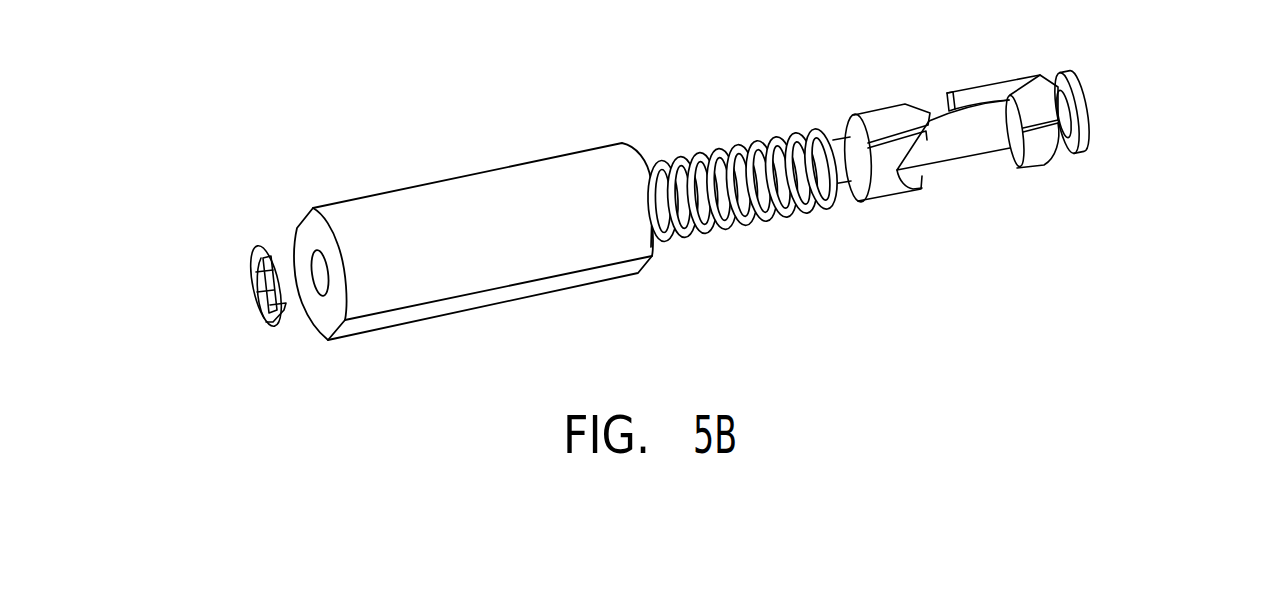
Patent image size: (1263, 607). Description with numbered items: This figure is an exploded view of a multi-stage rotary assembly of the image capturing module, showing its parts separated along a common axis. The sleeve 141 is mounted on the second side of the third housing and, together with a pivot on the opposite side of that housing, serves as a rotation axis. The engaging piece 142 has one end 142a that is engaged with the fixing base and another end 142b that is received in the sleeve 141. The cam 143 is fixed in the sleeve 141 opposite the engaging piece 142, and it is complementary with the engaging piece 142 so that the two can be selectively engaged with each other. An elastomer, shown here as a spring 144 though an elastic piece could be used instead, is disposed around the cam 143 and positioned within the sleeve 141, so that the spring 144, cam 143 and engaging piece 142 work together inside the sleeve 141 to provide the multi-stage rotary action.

The sleeve 141 is at (475, 300).
The engaging piece 142 is at (1038, 152).
The one end of the engaging piece 142a is at (1077, 80).
The another end of the engaging piece 142b is at (947, 95).
The cam 143 is at (883, 187).
The spring 144 is at (747, 210).